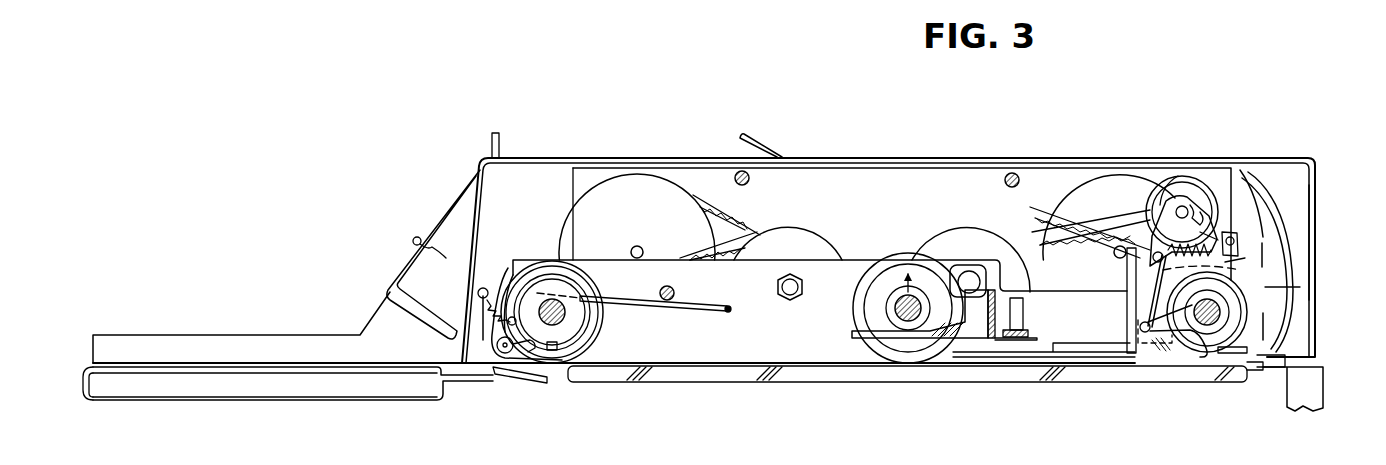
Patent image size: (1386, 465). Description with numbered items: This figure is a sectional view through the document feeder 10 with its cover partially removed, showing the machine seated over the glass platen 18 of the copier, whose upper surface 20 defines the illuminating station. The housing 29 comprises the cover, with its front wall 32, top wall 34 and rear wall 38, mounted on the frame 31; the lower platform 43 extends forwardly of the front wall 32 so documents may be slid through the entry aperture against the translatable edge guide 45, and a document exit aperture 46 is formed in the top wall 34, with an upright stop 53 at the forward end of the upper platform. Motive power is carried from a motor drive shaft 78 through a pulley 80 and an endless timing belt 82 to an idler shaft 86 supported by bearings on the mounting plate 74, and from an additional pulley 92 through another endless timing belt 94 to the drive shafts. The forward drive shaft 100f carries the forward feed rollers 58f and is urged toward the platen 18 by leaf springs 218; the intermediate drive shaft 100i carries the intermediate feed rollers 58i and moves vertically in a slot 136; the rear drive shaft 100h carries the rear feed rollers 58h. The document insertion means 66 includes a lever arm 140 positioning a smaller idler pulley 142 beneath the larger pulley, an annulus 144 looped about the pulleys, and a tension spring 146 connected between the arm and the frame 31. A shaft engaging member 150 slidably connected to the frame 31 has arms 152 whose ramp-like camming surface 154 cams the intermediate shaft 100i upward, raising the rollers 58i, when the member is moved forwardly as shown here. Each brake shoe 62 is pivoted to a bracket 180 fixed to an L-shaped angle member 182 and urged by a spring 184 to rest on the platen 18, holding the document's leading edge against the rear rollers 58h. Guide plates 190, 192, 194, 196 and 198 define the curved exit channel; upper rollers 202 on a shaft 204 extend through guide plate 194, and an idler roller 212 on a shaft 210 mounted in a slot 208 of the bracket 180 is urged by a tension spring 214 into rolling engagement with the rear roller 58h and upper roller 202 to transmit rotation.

The document feeder 10 is at (688, 392).
The glass platen 18 is at (783, 386).
The upper surface of the platen 20 is at (724, 365).
The housing 29 is at (1318, 162).
The frame 31 is at (158, 403).
The front wall 32 is at (405, 268).
The top wall 34 is at (975, 156).
The rear wall 38 is at (1312, 192).
The lower platform 43 is at (246, 360).
The edge guide 45 is at (126, 335).
The document exit aperture 46 is at (733, 150).
The upright stop 53 is at (491, 143).
The forward feed rollers 58f is at (580, 353).
The intermediate feed rollers 58i is at (933, 353).
The rear feed rollers 58h is at (1268, 320).
The brake shoes 62 is at (1147, 340).
The document insertion means 66 is at (270, 459).
The mounting plate 74 is at (572, 182).
The drive shaft 78 is at (632, 247).
The pulley 80 is at (752, 228).
The endless timing belt 82 is at (722, 209).
The idler shaft 86 is at (777, 287).
The additional pulley 92 is at (815, 236).
The endless timing belt 94 is at (688, 251).
The forward drive shaft 100f is at (560, 323).
The intermediate drive shaft 100i is at (897, 292).
The rear drive shaft 100h is at (1206, 326).
The slot 136 is at (603, 307).
The lever arm 140 is at (508, 345).
The idler pulley 142 is at (497, 380).
The annulus 144 is at (590, 294).
The tension spring 146 is at (490, 298).
The shaft engaging member 150 is at (982, 343).
The arms 152 is at (997, 343).
The camming surface 154 is at (882, 340).
The bracket 180 is at (1182, 205).
The L-shaped angle member 182 is at (1139, 218).
The spring 184 is at (1160, 258).
The guide plate 190 is at (1258, 383).
The guide plate 192 is at (1295, 270).
The guide plate 194 is at (1272, 288).
The guide plate 196 is at (1273, 360).
The guide plate 198 is at (1280, 257).
The upper rollers 202 is at (1170, 176).
The shaft 204 is at (1195, 233).
The slot 208 is at (1235, 260).
The shaft 210 is at (1240, 245).
The idler roller 212 is at (1245, 196).
The tension spring 214 is at (1207, 222).
The leaf springs 218 is at (724, 304).